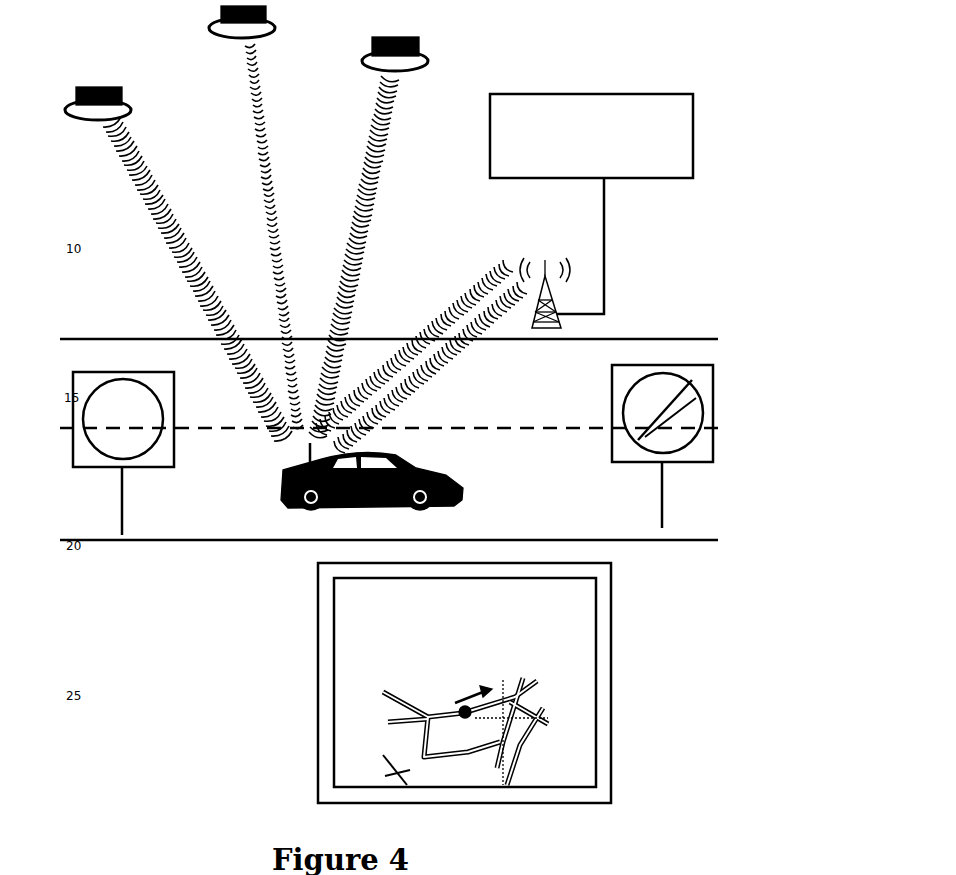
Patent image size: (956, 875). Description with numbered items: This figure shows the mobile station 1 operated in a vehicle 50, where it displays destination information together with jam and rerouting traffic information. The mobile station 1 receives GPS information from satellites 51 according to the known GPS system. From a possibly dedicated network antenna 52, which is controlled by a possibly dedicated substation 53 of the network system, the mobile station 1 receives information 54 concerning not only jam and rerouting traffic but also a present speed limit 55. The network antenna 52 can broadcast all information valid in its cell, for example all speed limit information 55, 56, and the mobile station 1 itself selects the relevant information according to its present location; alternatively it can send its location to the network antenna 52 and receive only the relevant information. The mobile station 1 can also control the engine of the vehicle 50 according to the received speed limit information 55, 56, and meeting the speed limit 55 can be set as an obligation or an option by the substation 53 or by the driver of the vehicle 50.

The mobile station 1 is at (430, 590).
The vehicle 50 is at (330, 512).
The satellites 51 is at (358, 70).
The network antenna 52 is at (553, 306).
The substation 53 is at (598, 100).
The information 54 is at (453, 310).
The speed limit 55 is at (100, 445).
The speed limit information 56 is at (678, 445).